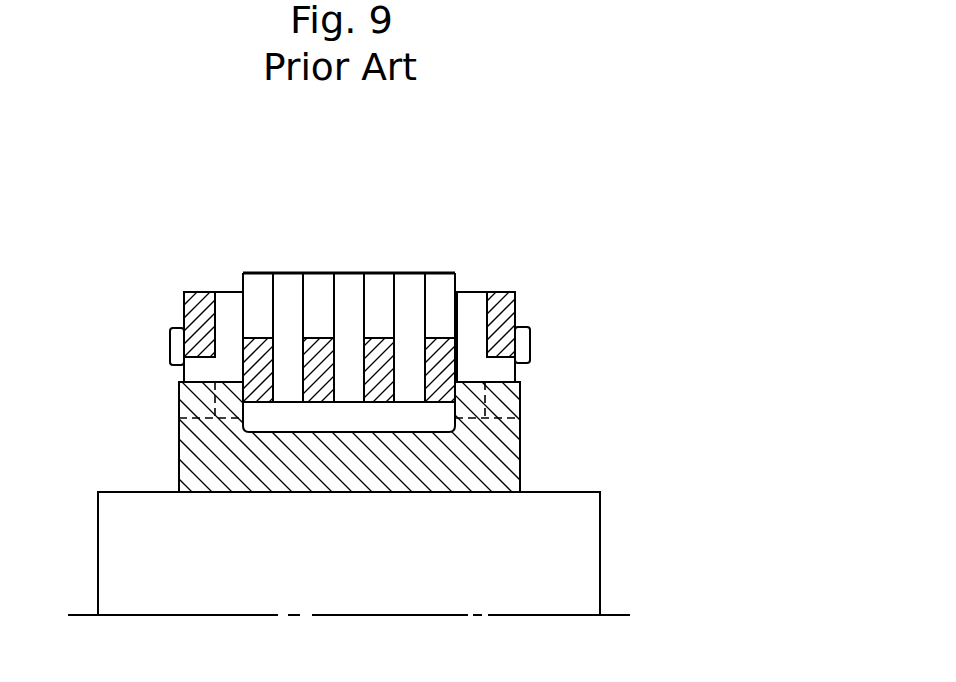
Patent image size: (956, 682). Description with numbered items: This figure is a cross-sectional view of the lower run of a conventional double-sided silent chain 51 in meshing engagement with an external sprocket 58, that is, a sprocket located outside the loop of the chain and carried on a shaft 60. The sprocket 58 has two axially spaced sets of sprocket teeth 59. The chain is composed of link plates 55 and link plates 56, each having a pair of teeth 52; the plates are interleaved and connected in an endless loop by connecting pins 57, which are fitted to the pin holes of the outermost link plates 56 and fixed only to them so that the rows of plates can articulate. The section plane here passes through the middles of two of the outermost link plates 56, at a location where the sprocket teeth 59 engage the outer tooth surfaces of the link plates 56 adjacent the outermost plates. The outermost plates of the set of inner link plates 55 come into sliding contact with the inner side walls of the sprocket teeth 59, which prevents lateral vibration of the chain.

The double-sided silent chain 51 is at (347, 285).
The teeth 52 is at (223, 397).
The link plates 55 is at (438, 282).
The link plates 56 is at (230, 306).
The connecting pins 57 is at (525, 346).
The external sprocket 58 is at (497, 452).
The sprocket teeth 59 is at (467, 402).
The shaft 60 is at (575, 553).